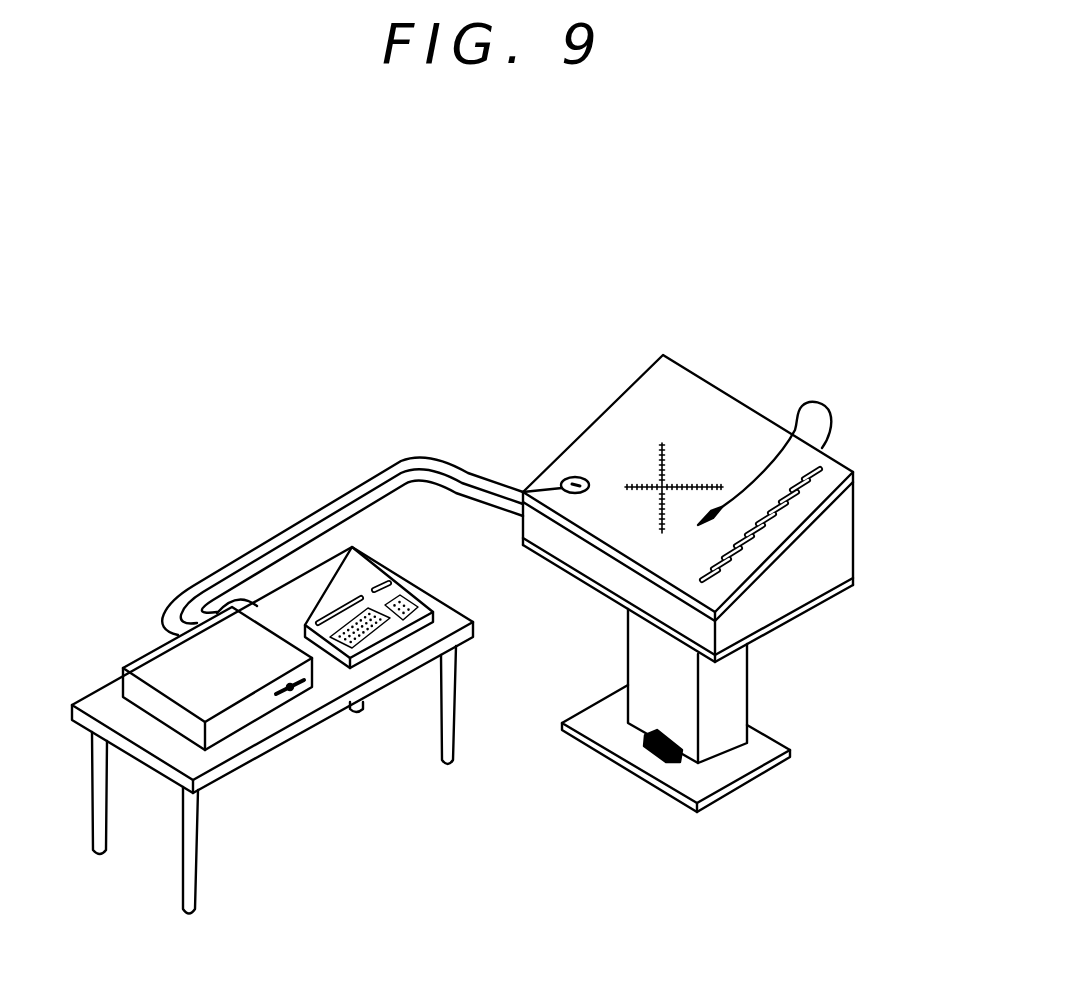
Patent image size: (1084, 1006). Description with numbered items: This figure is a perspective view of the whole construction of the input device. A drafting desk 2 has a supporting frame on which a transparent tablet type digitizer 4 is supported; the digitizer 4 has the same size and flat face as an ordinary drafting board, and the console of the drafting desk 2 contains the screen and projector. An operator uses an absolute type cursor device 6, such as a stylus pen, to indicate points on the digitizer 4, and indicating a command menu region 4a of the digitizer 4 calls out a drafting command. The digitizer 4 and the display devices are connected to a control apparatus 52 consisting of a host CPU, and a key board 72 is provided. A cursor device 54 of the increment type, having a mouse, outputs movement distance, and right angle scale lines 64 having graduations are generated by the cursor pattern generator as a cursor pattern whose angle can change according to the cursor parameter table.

The drafting desk 2 is at (737, 693).
The transparent tablet type digitizer 4 is at (697, 399).
The command menu region 4a is at (823, 531).
The absolute type cursor device 6 is at (710, 513).
The cursor device 54 is at (570, 476).
The right angle scale lines 64 is at (655, 468).
The control apparatus 52 is at (162, 662).
The key board 72 is at (395, 590).